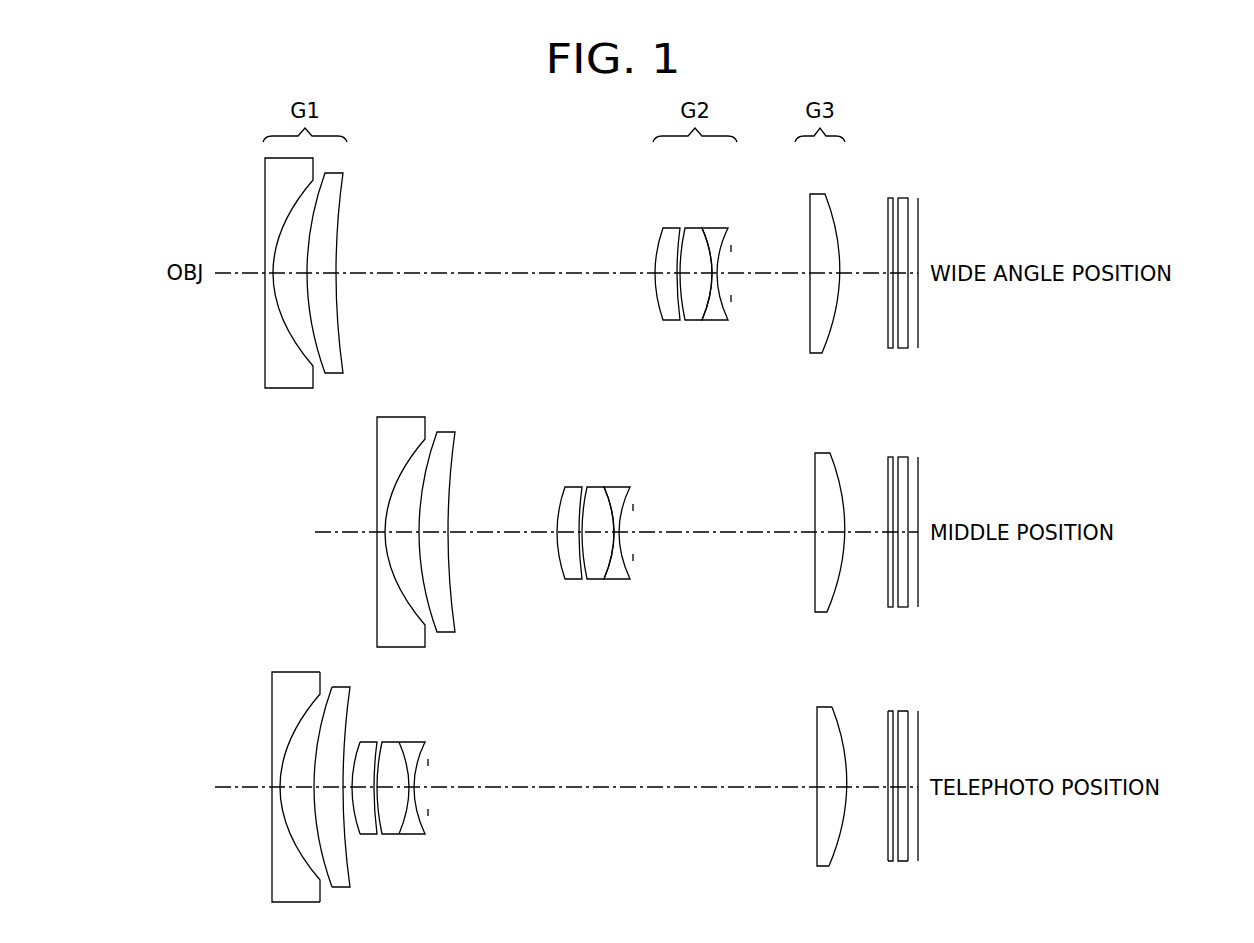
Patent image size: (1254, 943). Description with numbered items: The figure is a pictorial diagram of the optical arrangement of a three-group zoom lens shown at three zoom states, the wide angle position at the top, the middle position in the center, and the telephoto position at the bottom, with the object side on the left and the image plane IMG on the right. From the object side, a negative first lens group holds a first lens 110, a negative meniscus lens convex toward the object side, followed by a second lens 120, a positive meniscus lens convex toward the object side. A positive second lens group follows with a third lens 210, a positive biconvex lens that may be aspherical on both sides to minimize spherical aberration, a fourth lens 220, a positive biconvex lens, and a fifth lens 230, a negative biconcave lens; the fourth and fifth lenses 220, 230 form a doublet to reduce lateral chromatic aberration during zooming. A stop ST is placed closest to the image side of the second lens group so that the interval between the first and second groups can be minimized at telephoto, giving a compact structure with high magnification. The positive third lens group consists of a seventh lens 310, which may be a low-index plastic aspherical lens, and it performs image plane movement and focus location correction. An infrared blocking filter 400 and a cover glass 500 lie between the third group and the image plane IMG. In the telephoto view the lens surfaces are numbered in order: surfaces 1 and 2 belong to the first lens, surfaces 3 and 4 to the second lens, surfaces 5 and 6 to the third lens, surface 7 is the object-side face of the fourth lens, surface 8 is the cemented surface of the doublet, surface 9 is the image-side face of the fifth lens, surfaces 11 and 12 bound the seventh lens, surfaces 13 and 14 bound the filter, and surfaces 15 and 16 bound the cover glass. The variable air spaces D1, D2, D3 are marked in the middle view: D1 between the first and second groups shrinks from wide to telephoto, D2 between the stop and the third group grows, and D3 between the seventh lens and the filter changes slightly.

The first lens 110 is at (289, 388).
The second lens 120 is at (336, 373).
The third lens 210 is at (665, 315).
The fourth lens 220 is at (693, 318).
The fifth lens 230 is at (723, 318).
The seventh lens 310 is at (818, 353).
The infrared blocking filter 400 is at (887, 348).
The cover glass 500 is at (905, 348).
The stop ST is at (741, 249).
The image plane IMG is at (918, 221).
The variable distance D1 is at (503, 535).
The variable distance D2 is at (700, 535).
The variable distance D3 is at (865, 535).
The lens surface 1 is at (268, 835).
The lens surface 2 is at (298, 860).
The lens surface 3 is at (318, 860).
The lens surface 4 is at (348, 862).
The lens surface 5 is at (355, 752).
The lens surface 6 is at (378, 750).
The lens surface 7 is at (378, 833).
The lens surface 8 is at (405, 822).
The lens surface 9 is at (418, 798).
The lens surface 11 is at (817, 843).
The lens surface 12 is at (838, 850).
The surface 13 is at (887, 768).
The surface 14 is at (893, 725).
The surface 15 is at (902, 715).
The surface 16 is at (917, 713).